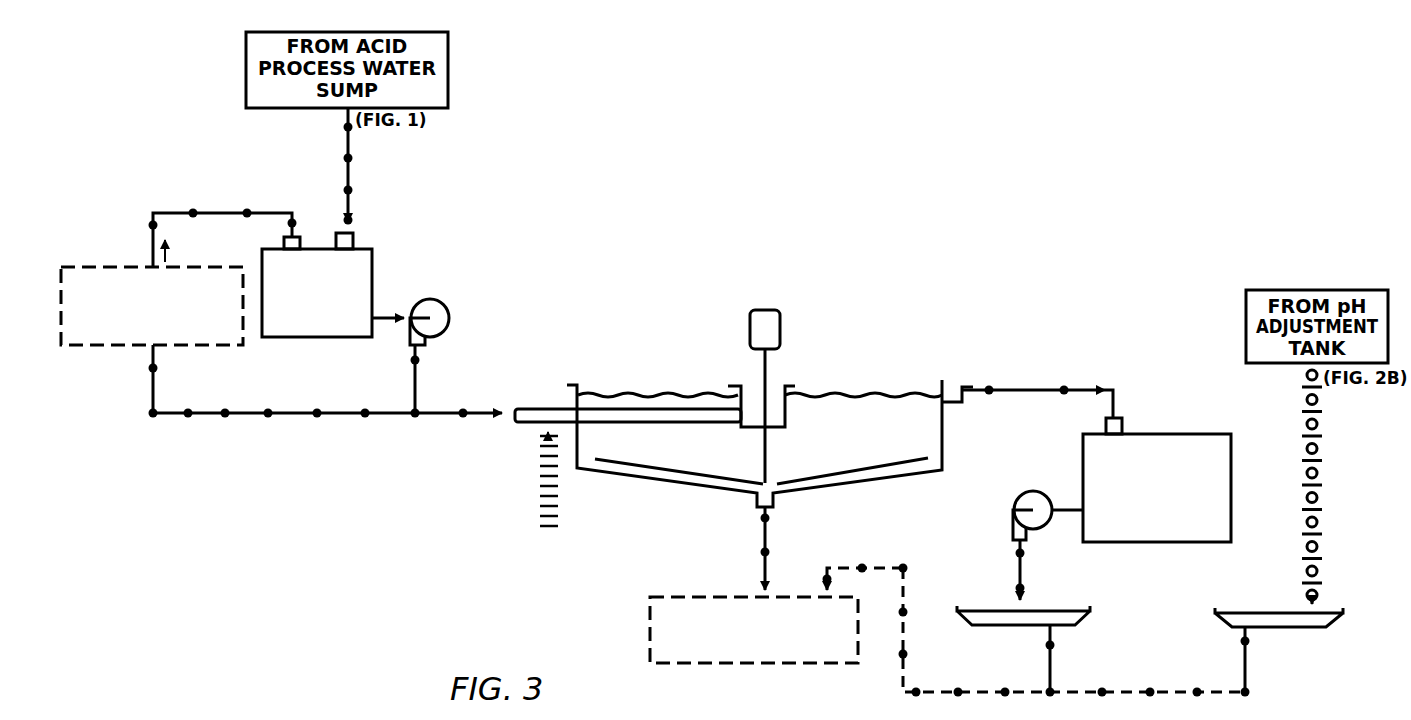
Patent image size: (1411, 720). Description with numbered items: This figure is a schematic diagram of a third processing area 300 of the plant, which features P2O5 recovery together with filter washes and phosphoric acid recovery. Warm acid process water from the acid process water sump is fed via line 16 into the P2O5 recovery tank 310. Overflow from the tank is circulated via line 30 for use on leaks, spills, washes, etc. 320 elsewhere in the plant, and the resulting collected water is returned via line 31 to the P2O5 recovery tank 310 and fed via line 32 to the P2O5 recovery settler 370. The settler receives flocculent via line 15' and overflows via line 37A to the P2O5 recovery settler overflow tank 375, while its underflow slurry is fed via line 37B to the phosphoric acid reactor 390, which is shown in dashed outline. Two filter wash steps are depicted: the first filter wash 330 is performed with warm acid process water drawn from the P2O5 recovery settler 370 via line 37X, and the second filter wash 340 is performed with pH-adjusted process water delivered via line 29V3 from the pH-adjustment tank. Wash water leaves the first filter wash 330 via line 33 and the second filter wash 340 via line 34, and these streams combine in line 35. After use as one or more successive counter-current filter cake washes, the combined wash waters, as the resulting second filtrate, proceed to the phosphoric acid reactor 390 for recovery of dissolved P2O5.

The line 16 is at (349, 213).
The line 31 is at (148, 241).
The leaks, spills, washes, etc. 320 is at (115, 346).
The P2O5 recovery tank 310 is at (291, 338).
The line 30 is at (318, 412).
The line 32 is at (473, 413).
The P2O5 recovery settler 370 is at (927, 470).
The line 15' is at (547, 496).
The line 37B is at (768, 556).
The phosphoric acid reactor 390 is at (710, 665).
The line 35 is at (902, 646).
The line 37A is at (1039, 389).
The P2O5 recovery settler overflow tank 375 is at (1193, 434).
The line 37X is at (1017, 570).
The filter wash no. 1 330 is at (1010, 627).
The line 33 is at (1052, 670).
The filter wash no. 2 340 is at (1277, 628).
The line 34 is at (1245, 671).
The line 29V3 is at (1302, 428).
The third processing area 300 is at (1216, 258).